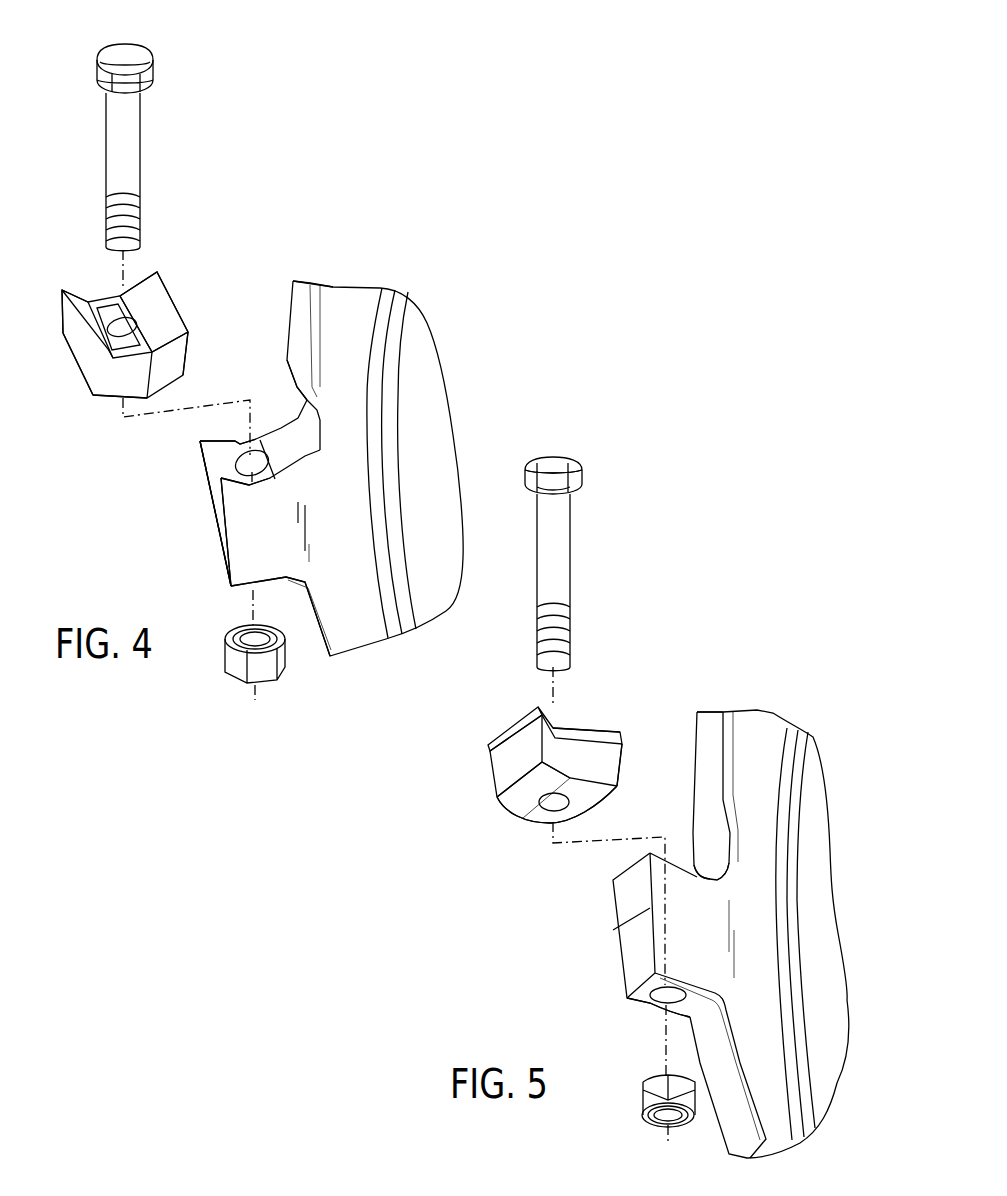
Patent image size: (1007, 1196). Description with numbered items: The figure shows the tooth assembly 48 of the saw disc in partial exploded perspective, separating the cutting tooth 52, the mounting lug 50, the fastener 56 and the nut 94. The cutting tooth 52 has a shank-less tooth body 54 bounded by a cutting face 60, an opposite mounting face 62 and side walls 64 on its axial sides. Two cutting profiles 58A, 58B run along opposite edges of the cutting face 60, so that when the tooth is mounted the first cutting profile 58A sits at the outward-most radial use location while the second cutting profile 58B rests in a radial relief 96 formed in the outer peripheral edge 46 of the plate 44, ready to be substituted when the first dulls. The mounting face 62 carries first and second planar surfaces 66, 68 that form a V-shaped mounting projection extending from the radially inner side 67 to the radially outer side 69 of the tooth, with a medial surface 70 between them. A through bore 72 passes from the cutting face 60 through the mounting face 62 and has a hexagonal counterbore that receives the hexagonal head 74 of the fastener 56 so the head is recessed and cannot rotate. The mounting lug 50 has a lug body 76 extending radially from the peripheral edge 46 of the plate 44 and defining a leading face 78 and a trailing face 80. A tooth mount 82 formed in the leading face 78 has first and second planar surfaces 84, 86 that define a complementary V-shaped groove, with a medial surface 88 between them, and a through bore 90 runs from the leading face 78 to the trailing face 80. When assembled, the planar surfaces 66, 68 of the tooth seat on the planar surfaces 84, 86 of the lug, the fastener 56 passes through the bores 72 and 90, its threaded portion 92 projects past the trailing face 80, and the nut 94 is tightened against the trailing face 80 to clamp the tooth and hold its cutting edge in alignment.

In FIG. 4, the plate 44 is at (448, 348).
In FIG. 5, the plate 44 is at (836, 844).
In FIG. 4, the peripheral edge 46 is at (305, 290).
In FIG. 5, the peripheral edge 46 is at (715, 722).
In FIG. 4, the tooth assembly 48 is at (100, 508).
In FIG. 4, the mounting lug 50 is at (217, 484).
In FIG. 5, the mounting lug 50 is at (635, 960).
In FIG. 4, the cutting tooth 52 is at (135, 332).
In FIG. 5, the cutting tooth 52 is at (561, 801).
In FIG. 4, the tooth body 54 is at (68, 385).
In FIG. 4, the fastener 56 is at (96, 130).
In FIG. 5, the fastener 56 is at (582, 547).
In FIG. 4, the first cutting profile 58A is at (78, 312).
In FIG. 4, the second cutting profile 58B is at (157, 300).
In FIG. 4, the cutting face 60 is at (78, 283).
In FIG. 5, the mounting face 62 is at (540, 838).
In FIG. 4, the side walls 64 is at (126, 388).
In FIG. 5, the side walls 64 is at (600, 757).
In FIG. 5, the first planar surface 66 is at (520, 802).
In FIG. 4, the radially inner side 67 is at (183, 355).
In FIG. 5, the radially inner side 67 is at (620, 768).
In FIG. 5, the second planar surface 68 is at (561, 824).
In FIG. 4, the radially outer side 69 is at (78, 343).
In FIG. 5, the radially outer side 69 is at (510, 760).
In FIG. 5, the medial surface 70 is at (532, 825).
In FIG. 4, the through bore 72 is at (130, 315).
In FIG. 5, the through bore 72 is at (567, 805).
In FIG. 4, the hexagonal head 74 is at (137, 62).
In FIG. 5, the hexagonal head 74 is at (556, 462).
In FIG. 4, the lug body 76 is at (267, 569).
In FIG. 5, the lug body 76 is at (677, 940).
In FIG. 4, the leading face 78 is at (218, 430).
In FIG. 5, the trailing face 80 is at (642, 1012).
In FIG. 4, the tooth mount 82 is at (250, 493).
In FIG. 5, the tooth mount 82 is at (700, 889).
In FIG. 4, the first planar surface 84 is at (217, 454).
In FIG. 4, the second planar surface 86 is at (277, 468).
In FIG. 4, the medial surface 88 is at (237, 442).
In FIG. 4, the through bore 90 is at (232, 465).
In FIG. 5, the through bore 90 is at (657, 995).
In FIG. 4, the threaded portion 92 is at (140, 213).
In FIG. 5, the threaded portion 92 is at (563, 630).
In FIG. 4, the nut 94 is at (240, 668).
In FIG. 5, the nut 94 is at (650, 1097).
In FIG. 4, the radial relief 96 is at (283, 422).
In FIG. 5, the radial relief 96 is at (697, 870).